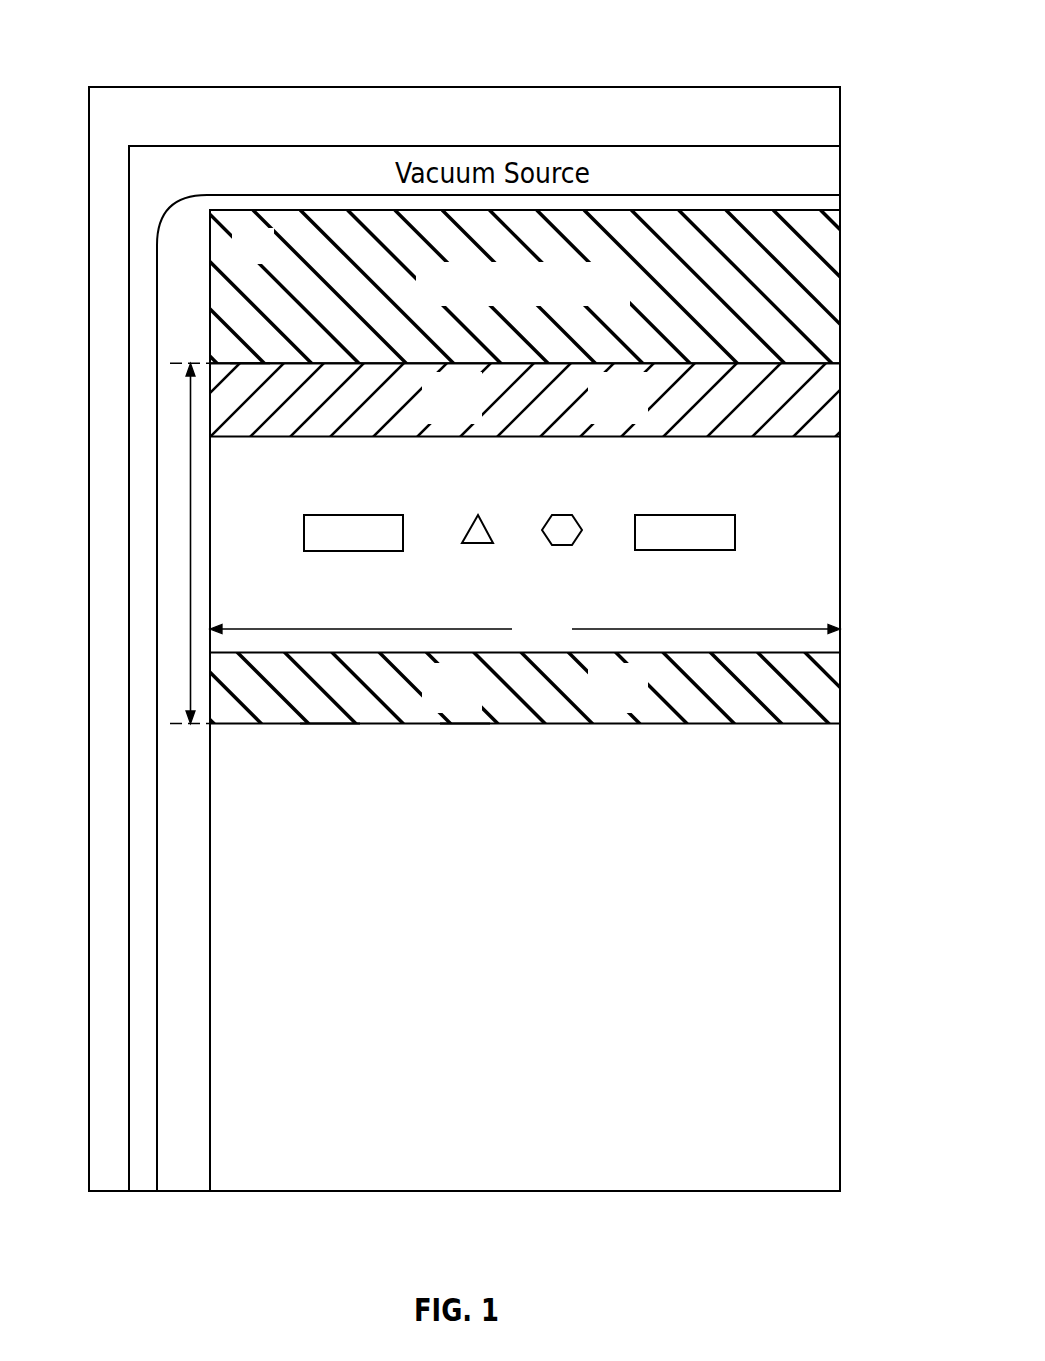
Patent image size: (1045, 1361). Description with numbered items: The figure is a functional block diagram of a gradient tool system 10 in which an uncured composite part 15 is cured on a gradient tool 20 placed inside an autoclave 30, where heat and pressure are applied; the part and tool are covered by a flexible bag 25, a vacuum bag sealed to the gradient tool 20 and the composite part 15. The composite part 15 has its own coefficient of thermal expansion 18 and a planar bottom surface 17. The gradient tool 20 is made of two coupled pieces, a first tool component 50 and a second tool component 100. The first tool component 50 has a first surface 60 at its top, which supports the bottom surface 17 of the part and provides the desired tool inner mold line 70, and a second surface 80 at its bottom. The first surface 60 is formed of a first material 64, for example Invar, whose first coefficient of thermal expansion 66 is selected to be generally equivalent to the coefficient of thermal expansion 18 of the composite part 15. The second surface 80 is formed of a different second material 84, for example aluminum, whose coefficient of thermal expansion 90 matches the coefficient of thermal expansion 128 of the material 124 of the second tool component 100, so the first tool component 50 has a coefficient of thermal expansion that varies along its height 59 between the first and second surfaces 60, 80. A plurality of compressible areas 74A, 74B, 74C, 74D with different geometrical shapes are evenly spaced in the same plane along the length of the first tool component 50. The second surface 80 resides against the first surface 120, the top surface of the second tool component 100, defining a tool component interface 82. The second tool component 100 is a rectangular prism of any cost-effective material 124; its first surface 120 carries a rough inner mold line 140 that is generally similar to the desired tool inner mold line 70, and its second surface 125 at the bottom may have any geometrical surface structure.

The gradient tool system 10 is at (808, 40).
The uncured composite part 15 is at (519, 287).
The bottom surface of the composite part 17 is at (248, 364).
The coefficient of thermal expansion of the composite part 18 is at (269, 259).
The gradient tool 20 is at (866, 554).
The flexible bag 25 is at (156, 1117).
The autoclave 30 is at (138, 86).
The first tool component 50 is at (480, 553).
The height of the first tool component 59 is at (186, 523).
The first surface of the first tool component 60 is at (537, 359).
The first material 64 is at (468, 417).
The first coefficient of thermal expansion 66 is at (633, 417).
The desired tool inner mold line 70 is at (853, 363).
The compressible area 74A is at (353, 515).
The compressible area 74B is at (473, 520).
The compressible area 74C is at (563, 515).
The compressible area 74D is at (687, 515).
The second surface of the first tool component 80 is at (516, 739).
The tool component interface 82 is at (853, 724).
The second material 84 is at (468, 703).
The coefficient of thermal expansion of the second surface 90 is at (633, 703).
The second tool component 100 is at (565, 987).
The first surface of the second tool component 120 is at (322, 724).
The material of the second tool component 124 is at (411, 957).
The second surface of the second tool component 125 is at (480, 1192).
The coefficient of thermal expansion of the second tool component material 128 is at (651, 957).
The rough inner mold line 140 is at (464, 738).